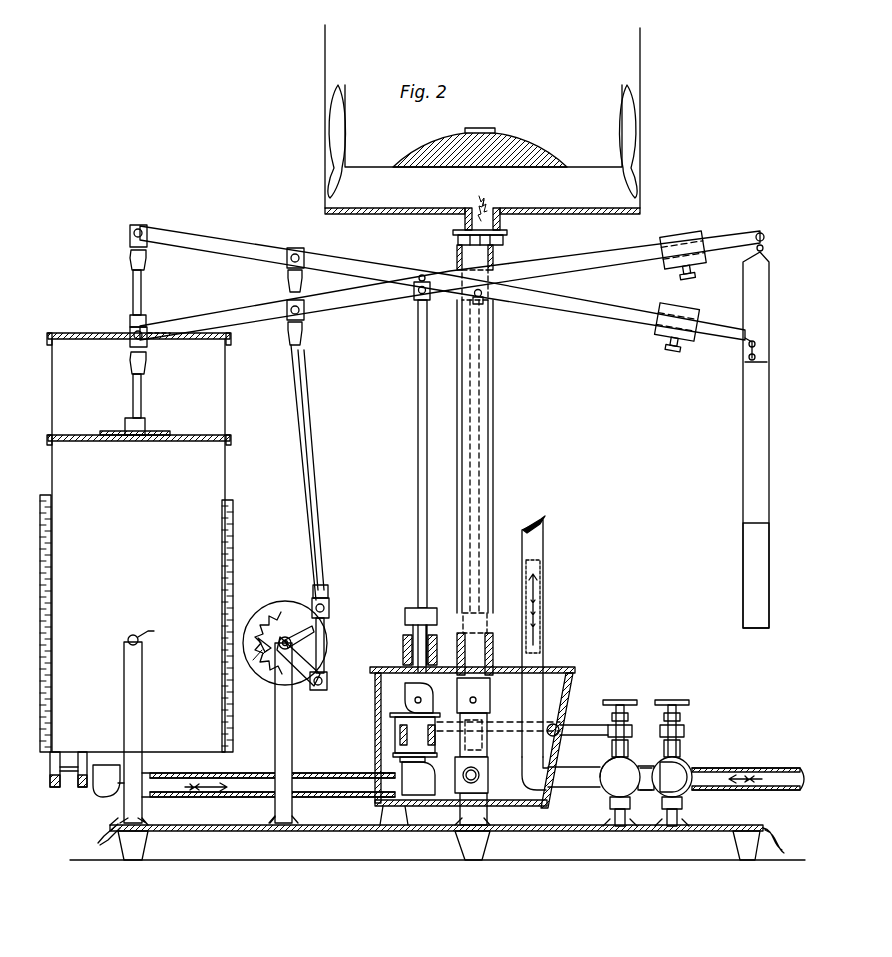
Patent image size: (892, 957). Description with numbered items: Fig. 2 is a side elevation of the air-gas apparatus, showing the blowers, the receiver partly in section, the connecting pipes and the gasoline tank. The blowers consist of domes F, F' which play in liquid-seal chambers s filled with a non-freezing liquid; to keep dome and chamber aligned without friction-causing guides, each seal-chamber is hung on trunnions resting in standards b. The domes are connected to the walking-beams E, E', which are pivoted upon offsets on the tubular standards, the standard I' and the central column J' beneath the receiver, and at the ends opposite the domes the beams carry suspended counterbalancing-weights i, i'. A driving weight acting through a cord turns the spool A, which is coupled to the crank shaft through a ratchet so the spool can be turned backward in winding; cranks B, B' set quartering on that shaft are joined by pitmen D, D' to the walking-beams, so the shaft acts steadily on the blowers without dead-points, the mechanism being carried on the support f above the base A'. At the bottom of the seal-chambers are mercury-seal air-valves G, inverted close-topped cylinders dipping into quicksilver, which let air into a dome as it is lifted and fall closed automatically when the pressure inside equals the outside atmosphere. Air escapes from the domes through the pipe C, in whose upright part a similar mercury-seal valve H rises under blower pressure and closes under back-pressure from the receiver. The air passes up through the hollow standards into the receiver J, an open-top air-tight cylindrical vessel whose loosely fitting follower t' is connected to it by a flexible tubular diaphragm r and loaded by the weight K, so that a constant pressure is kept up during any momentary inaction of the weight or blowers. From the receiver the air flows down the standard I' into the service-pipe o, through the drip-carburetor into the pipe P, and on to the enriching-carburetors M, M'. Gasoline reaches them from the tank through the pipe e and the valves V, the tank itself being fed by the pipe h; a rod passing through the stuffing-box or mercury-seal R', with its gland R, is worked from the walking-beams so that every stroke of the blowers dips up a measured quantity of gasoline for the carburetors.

The receiver J is at (482, 316).
The follower t' is at (347, 141).
The tubular diaphragm r is at (622, 90).
The weight K is at (456, 132).
The walking-beam E is at (442, 284).
The walking-beam E' is at (450, 285).
The dome F is at (147, 330).
The dome F' is at (139, 560).
The liquid-seal chamber s is at (44, 636).
The standard b is at (142, 732).
The mercury-seal air-valve G is at (108, 790).
The pipe C is at (268, 785).
The standard f is at (292, 748).
The spool A is at (285, 634).
The pitman D is at (318, 419).
The pitman D' is at (289, 472).
The crank B is at (331, 629).
The crank B' is at (332, 682).
The column J' is at (488, 429).
The gland R is at (404, 640).
The mercury-seal R' is at (460, 673).
The mercury-seal valve H is at (415, 754).
The pipe h is at (545, 805).
The standard I' is at (475, 719).
The service-pipe o is at (460, 777).
The pipe P is at (527, 534).
The valve V is at (612, 722).
The pipe e is at (646, 763).
The enriching-carburetor M' is at (604, 783).
The enriching-carburetor M is at (687, 783).
The base A' is at (437, 838).
The counterbalancing-weight i is at (756, 430).
The counterbalancing-weight i' is at (756, 575).